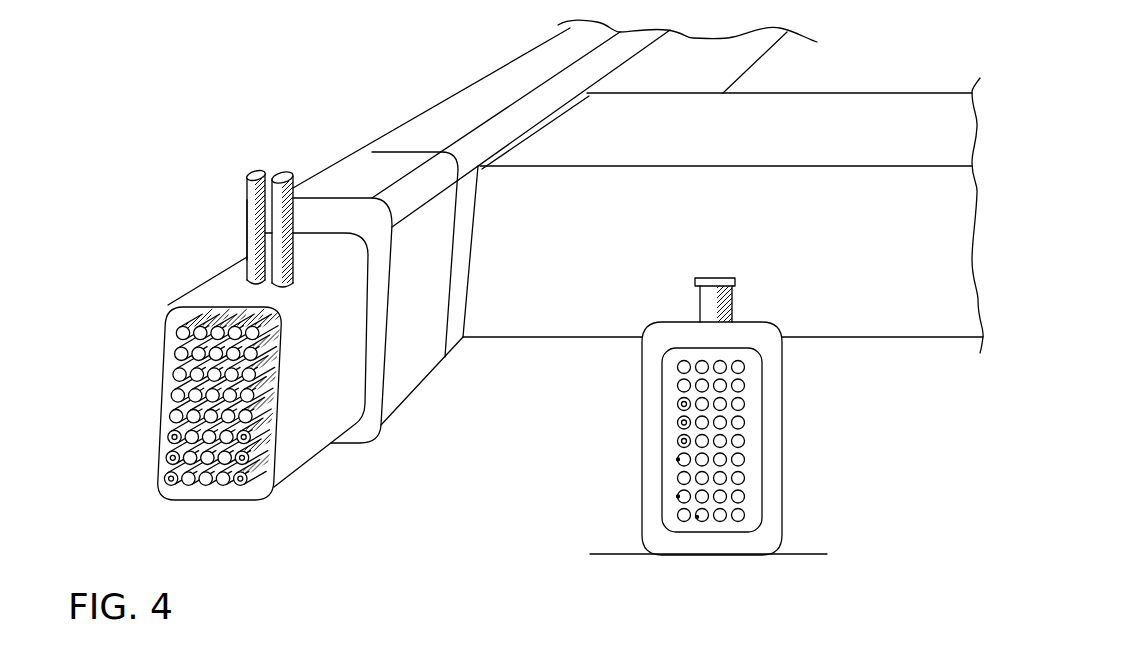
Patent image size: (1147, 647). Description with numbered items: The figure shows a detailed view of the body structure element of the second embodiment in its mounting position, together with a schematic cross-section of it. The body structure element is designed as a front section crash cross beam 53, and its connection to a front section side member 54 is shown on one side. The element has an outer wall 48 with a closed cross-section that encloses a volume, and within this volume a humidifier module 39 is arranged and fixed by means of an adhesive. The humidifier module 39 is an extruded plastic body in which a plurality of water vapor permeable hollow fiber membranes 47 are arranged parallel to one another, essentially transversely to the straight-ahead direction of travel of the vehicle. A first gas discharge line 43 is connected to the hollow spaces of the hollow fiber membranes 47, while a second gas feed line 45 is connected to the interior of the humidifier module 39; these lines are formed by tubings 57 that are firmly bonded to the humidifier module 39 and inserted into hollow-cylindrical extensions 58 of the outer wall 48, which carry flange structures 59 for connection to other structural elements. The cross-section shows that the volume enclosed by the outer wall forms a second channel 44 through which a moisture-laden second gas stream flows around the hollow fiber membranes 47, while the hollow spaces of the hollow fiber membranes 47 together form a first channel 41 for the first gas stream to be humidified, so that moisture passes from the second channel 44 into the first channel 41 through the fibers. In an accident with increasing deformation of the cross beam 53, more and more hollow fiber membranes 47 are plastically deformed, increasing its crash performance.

The humidifier module 39 is at (212, 282).
The first channel 41 is at (171, 479).
The first gas discharge line 43 is at (282, 173).
The second channel 44 is at (166, 382).
The second gas feed line 45 is at (248, 172).
The hollow fiber membranes 47 is at (246, 438).
The outer wall 48 is at (441, 116).
The front section crash cross beam 53 is at (370, 142).
The front section side member 54 is at (862, 93).
The tubings 57 is at (247, 223).
The hollow-cylindrical extensions 58 is at (730, 311).
The flange structures 59 is at (735, 283).